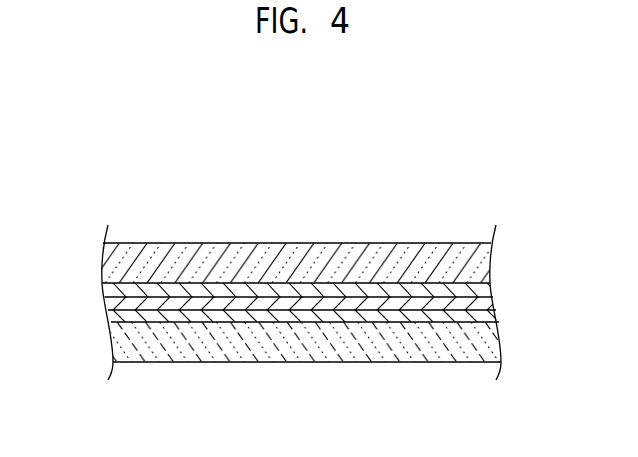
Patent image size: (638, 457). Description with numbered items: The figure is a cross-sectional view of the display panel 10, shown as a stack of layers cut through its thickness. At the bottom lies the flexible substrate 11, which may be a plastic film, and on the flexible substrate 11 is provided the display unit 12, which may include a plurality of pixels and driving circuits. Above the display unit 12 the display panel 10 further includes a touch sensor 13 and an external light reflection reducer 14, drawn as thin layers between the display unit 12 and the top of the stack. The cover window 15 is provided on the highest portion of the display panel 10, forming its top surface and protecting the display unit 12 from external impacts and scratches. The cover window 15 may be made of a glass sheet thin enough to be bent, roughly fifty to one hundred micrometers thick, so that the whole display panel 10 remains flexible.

The display panel 10 is at (361, 172).
The flexible substrate 11 is at (318, 358).
The display unit 12 is at (498, 316).
The touch sensor 13 is at (108, 303).
The external light reflection reducer 14 is at (492, 290).
The cover window 15 is at (430, 243).